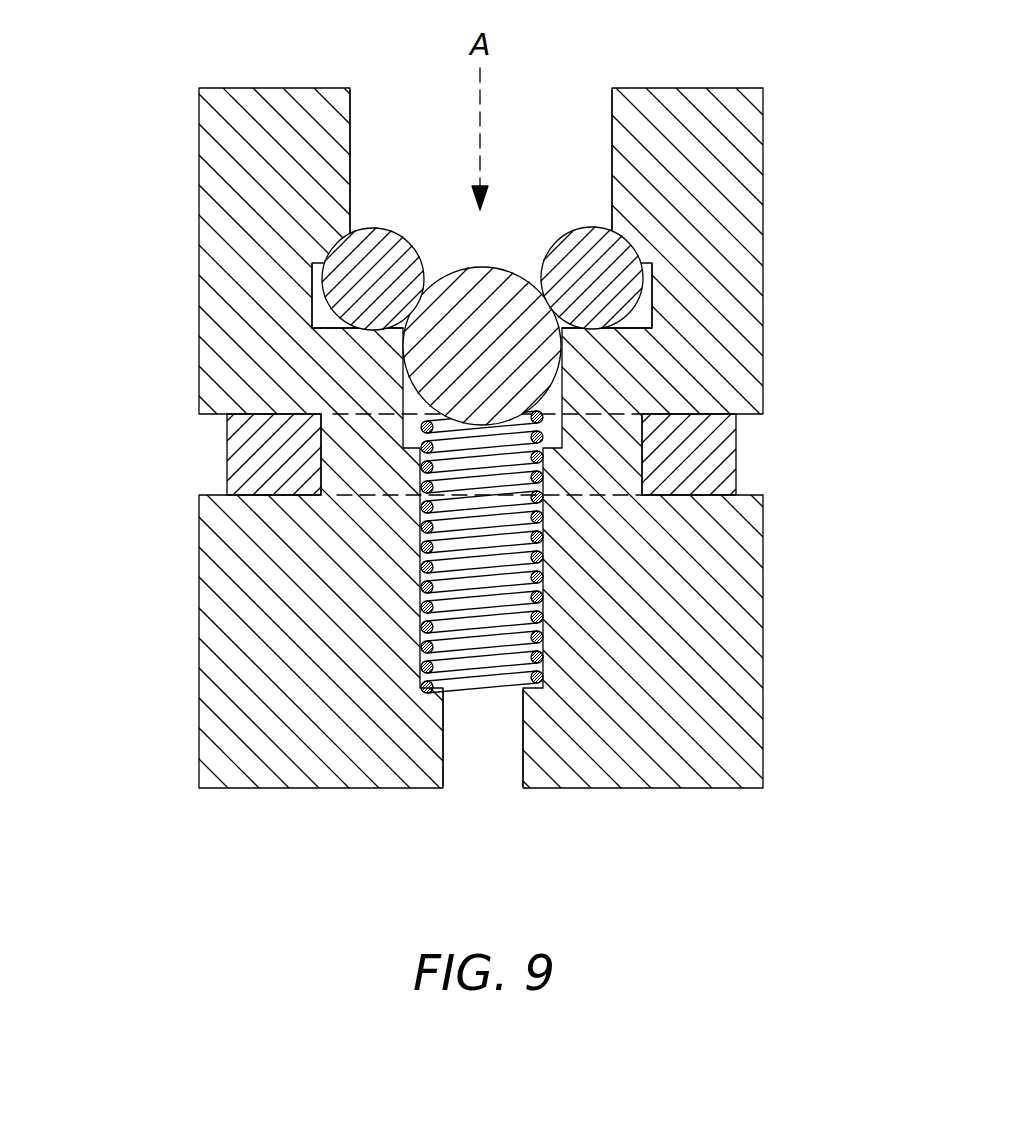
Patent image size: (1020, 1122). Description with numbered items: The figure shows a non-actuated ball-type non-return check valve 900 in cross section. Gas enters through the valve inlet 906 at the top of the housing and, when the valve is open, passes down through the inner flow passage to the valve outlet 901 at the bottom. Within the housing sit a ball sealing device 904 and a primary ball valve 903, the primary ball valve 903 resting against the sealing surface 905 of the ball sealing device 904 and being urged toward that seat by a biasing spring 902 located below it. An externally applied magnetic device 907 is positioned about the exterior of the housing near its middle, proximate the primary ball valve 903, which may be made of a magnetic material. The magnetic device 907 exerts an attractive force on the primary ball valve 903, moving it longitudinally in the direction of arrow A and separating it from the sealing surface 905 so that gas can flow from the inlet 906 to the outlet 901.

The check valve 900 is at (197, 504).
The valve outlet 901 is at (485, 748).
The biasing spring 902 is at (498, 582).
The primary ball valve 903 is at (508, 347).
The ball sealing device 904 is at (375, 268).
The sealing surface 905 is at (380, 332).
The valve inlet 906 is at (547, 148).
The magnetic device 907 is at (245, 463).